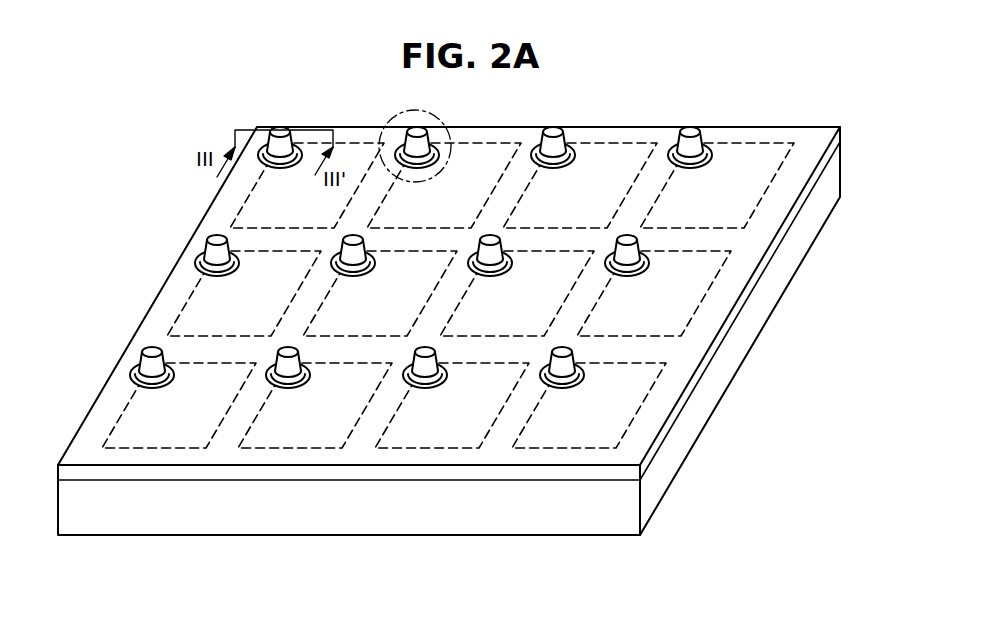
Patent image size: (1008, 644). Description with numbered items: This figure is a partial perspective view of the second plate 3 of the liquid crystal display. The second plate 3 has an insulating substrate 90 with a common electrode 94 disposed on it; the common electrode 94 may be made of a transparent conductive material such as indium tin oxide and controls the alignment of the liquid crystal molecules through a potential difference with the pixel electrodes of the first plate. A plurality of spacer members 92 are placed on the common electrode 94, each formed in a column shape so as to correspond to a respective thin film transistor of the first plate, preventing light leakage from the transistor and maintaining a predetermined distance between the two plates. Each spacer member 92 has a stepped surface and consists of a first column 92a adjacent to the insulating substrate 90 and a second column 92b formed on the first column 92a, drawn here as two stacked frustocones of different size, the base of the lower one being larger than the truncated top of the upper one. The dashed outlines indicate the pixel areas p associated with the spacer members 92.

The second plate 3 is at (474, 331).
The insulating substrate 90 is at (726, 375).
The common electrode 94 is at (743, 300).
The spacer member 92 is at (142, 240).
The first column 92a is at (203, 268).
The second column 92b is at (213, 238).
The pixel area p is at (182, 313).